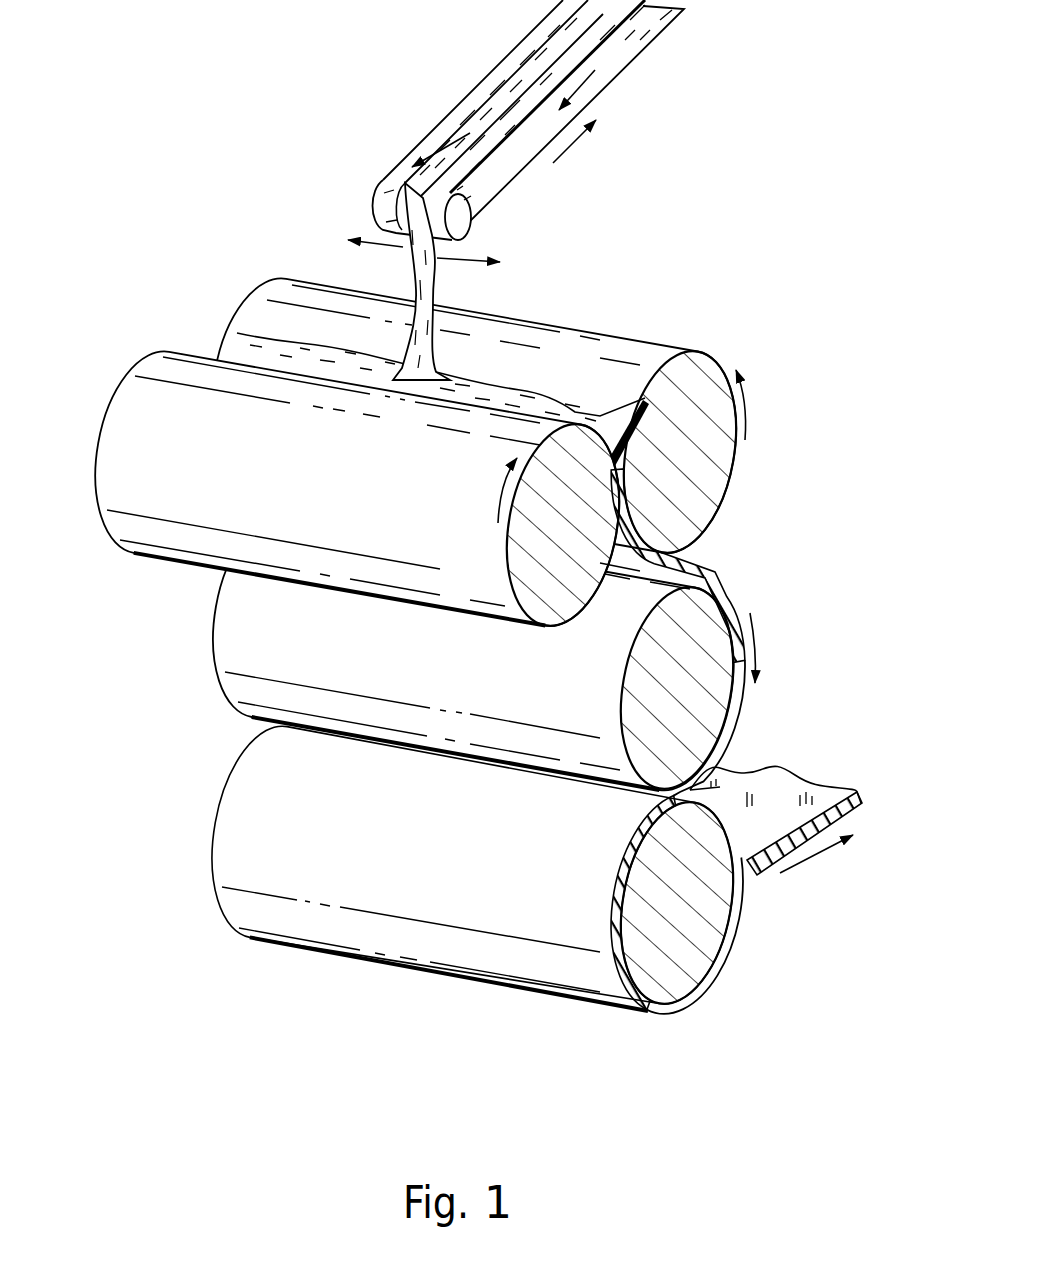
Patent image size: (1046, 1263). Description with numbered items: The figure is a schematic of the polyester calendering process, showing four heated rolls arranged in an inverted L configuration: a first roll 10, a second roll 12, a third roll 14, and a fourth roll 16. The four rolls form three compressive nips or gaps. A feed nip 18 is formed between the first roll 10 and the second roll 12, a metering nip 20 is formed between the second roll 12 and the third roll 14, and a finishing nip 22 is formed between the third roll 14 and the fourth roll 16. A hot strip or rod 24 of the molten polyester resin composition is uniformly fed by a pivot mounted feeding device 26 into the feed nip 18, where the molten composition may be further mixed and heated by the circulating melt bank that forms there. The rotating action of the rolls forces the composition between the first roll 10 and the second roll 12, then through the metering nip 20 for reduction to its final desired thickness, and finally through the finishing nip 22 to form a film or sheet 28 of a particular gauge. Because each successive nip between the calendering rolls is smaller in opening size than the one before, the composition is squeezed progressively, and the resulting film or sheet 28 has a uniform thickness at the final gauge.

The first roll 10 is at (123, 430).
The second roll 12 is at (502, 419).
The third roll 14 is at (712, 690).
The fourth roll 16 is at (693, 963).
The feed nip 18 is at (585, 393).
The metering nip 20 is at (706, 560).
The finishing nip 22 is at (703, 792).
The hot strip or rod 24 is at (430, 267).
The pivot mounted feeding device 26 is at (510, 170).
The film or sheet 28 is at (827, 797).